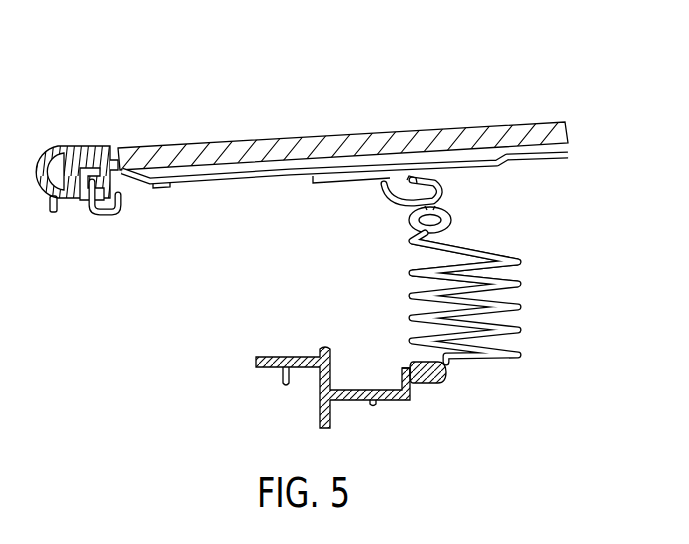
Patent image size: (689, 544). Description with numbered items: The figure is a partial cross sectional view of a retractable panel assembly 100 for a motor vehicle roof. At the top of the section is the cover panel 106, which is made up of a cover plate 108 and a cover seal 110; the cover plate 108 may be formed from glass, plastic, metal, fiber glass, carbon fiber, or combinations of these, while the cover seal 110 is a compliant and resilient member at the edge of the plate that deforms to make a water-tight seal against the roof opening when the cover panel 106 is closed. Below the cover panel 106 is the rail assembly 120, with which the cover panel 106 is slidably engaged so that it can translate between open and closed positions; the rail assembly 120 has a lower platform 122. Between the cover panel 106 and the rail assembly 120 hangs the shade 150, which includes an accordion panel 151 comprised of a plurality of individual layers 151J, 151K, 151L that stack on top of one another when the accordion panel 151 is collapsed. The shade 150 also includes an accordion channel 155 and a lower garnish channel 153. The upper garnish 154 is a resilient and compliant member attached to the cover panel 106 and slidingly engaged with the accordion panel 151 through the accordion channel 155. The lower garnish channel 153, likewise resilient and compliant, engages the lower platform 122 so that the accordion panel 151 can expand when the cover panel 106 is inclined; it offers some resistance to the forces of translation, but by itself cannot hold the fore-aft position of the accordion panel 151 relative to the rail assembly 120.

The retractable panel assembly 100 is at (470, 78).
The cover panel 106 is at (317, 124).
The cover plate 108 is at (222, 143).
The cover seal 110 is at (79, 144).
The rail assembly 120 is at (379, 406).
The lower platform 122 is at (403, 368).
The shade 150 is at (530, 332).
The accordion panel 151 is at (527, 284).
The individual layer 151J is at (505, 253).
The individual layer 151K is at (428, 268).
The individual layer 151L is at (483, 267).
The lower garnish channel 153 is at (434, 384).
The upper garnish 154 is at (444, 193).
The accordion channel 155 is at (451, 214).